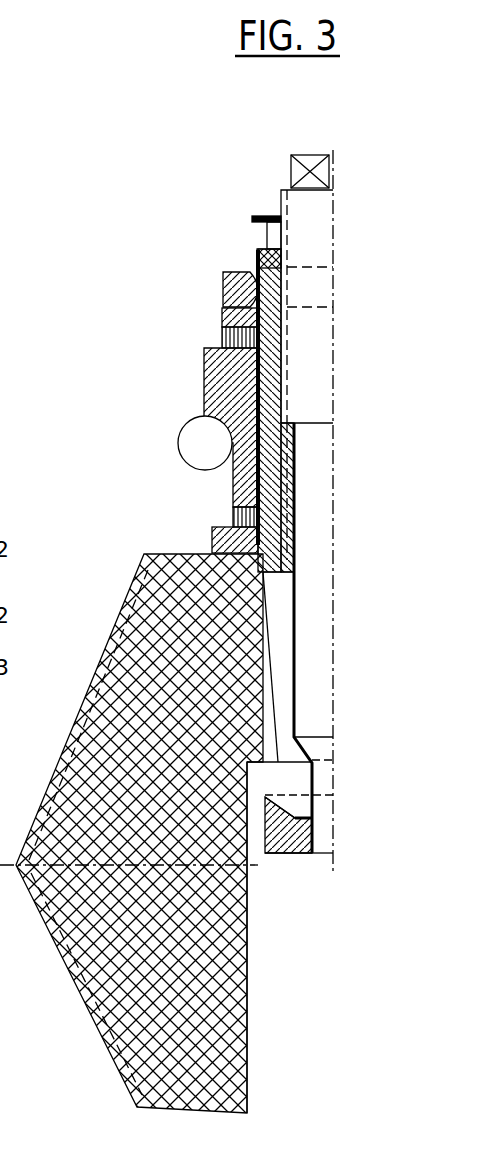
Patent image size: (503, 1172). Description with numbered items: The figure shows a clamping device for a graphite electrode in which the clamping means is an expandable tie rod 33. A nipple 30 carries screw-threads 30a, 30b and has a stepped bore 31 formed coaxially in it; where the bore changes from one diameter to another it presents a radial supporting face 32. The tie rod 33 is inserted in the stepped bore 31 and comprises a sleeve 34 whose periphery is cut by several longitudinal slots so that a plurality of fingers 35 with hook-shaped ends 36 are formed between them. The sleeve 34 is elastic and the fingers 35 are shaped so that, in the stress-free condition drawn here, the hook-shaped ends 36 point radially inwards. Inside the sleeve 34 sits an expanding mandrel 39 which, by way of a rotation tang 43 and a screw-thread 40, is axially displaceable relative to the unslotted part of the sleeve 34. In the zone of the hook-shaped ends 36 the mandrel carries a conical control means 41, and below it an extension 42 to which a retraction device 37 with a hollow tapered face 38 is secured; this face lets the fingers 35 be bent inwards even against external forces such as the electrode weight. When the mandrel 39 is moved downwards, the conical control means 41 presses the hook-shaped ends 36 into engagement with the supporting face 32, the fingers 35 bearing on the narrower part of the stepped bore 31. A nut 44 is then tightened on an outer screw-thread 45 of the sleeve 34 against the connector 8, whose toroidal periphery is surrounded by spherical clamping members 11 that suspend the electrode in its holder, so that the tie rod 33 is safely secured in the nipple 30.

The connector 8 is at (204, 377).
The clamping members 11 is at (197, 437).
The nipple 30 is at (175, 553).
The screw-thread 30a is at (117, 618).
The screw-thread 30b is at (108, 1027).
The stepped bore 31 is at (249, 985).
The supporting face 32 is at (253, 765).
The expandable tie rod 33 is at (352, 450).
The sleeve 34 is at (283, 530).
The fingers 35 is at (288, 655).
The hook-shaped ends 36 is at (318, 812).
The retraction device 37 is at (292, 855).
The hollow tapered face 38 is at (284, 809).
The expanding mandrel 39 is at (320, 372).
The screw-thread 40 is at (288, 333).
The conical control means 41 is at (311, 748).
The extension 42 is at (328, 847).
The rotation tang 43 is at (330, 172).
The nut 44 is at (222, 285).
The outer screw-thread 45 is at (258, 272).